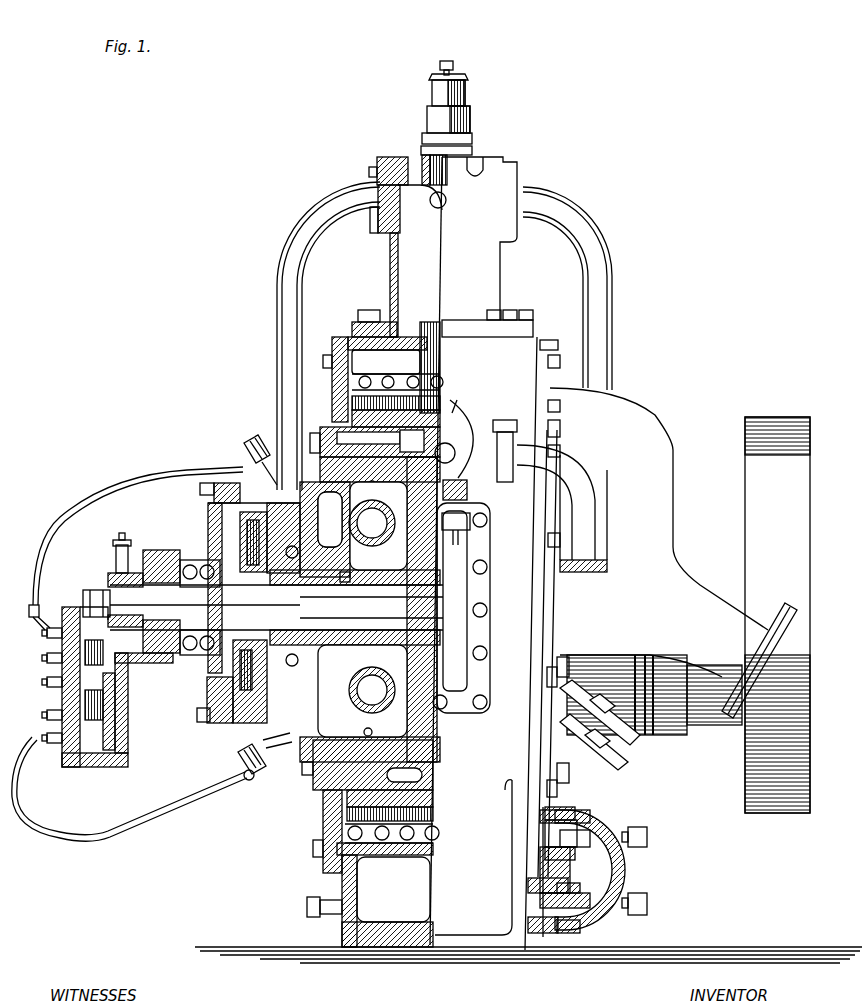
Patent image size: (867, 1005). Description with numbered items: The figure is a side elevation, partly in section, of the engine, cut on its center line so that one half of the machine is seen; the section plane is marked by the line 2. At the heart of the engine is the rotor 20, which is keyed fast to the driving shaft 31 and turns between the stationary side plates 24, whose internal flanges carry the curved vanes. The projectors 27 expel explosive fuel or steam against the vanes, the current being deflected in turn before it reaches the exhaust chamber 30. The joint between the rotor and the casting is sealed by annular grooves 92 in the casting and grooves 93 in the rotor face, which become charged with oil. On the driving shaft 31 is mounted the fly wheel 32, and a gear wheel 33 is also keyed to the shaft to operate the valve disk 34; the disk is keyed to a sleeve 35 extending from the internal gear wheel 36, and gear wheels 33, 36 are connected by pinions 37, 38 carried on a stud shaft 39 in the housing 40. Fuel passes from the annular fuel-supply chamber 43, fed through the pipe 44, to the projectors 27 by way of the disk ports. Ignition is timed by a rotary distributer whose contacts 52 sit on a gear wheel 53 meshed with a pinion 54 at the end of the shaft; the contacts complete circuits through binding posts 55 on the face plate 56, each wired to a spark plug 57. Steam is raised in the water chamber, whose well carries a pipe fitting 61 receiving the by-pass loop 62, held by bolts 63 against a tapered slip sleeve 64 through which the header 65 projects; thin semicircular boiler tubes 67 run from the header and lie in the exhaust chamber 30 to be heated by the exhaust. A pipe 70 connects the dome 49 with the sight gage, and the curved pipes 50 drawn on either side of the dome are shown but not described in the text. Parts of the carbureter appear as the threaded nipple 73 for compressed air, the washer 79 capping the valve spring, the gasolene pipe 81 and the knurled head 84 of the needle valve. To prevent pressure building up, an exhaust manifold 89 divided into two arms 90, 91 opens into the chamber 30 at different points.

The section line 2- 2 is at (442, 60).
The rotor 20 is at (430, 775).
The side plates 24 is at (333, 400).
The projectors 27 is at (362, 609).
The exhaust chamber 30 is at (343, 812).
The driving shaft 31 is at (410, 605).
The fly wheel 32 is at (768, 430).
The gear wheel 33 is at (238, 585).
The valve disk 34 is at (343, 582).
The sleeve 35 is at (300, 580).
The internal gear wheel 36 is at (245, 532).
The pinion 37 is at (207, 703).
The pinion 38 is at (247, 708).
The stud shaft 39 is at (210, 690).
The housing 40 is at (197, 665).
The fuel-supply chamber 43 is at (290, 668).
The pipe 44 is at (590, 527).
The dome 49 is at (405, 267).
The pipe 50 is at (315, 213).
The contacts 52 is at (47, 638).
The gear wheel 53 is at (113, 735).
The pinion 54 is at (113, 566).
The binding posts 55 is at (45, 683).
The face plate 56 is at (47, 718).
The spark plugs 57 is at (253, 450).
The pipe fitting 61 is at (547, 905).
The by-pass loop 62 is at (610, 873).
The bolts 63 is at (647, 837).
The slip sleeve 64 is at (565, 838).
The header 65 is at (415, 837).
The boiler tubes 67 is at (407, 812).
The pipe 70 is at (446, 200).
The threaded nipple 73 is at (452, 413).
The washer 79 is at (456, 450).
The pipe 81 is at (453, 545).
The knurled head 84 is at (485, 498).
The exhaust manifold 89 is at (727, 676).
The arm 90 is at (650, 437).
The arm 91 is at (560, 615).
The annular grooves 92 is at (345, 495).
The grooves 93 is at (398, 460).